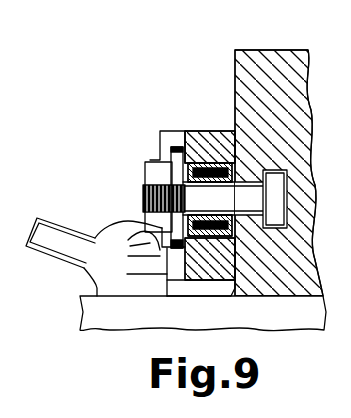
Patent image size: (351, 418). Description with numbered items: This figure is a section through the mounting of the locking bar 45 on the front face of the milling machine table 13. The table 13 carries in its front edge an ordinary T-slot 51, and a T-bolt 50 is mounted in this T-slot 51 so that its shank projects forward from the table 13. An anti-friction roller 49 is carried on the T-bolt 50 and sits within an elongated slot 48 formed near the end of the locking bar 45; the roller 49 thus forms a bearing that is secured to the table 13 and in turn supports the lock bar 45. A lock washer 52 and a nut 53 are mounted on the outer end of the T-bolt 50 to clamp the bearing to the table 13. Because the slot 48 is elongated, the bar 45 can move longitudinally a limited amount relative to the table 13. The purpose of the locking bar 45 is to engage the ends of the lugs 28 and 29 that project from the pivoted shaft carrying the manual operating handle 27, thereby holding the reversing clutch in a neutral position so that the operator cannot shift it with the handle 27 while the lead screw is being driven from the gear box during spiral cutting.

The table 13 is at (272, 50).
The manual operating handle 27 is at (45, 220).
The lug 28 is at (133, 222).
The lug 29 is at (148, 268).
The locking bar 45 is at (222, 150).
The elongated slot 48 is at (207, 242).
The anti-friction roller 49 is at (207, 197).
The T-bolt 50 is at (185, 131).
The T-slot 51 is at (268, 292).
The lock washer 52 is at (170, 155).
The nut 53 is at (147, 173).